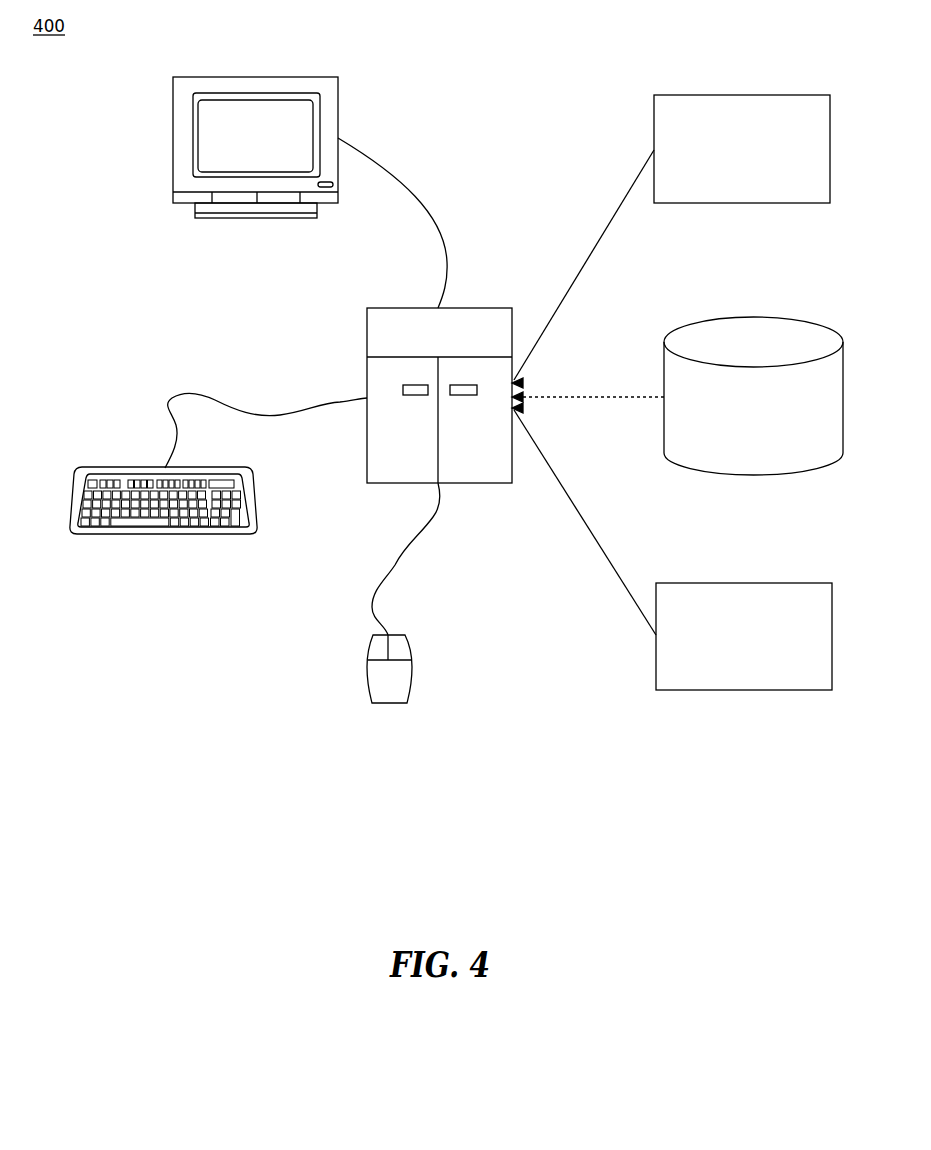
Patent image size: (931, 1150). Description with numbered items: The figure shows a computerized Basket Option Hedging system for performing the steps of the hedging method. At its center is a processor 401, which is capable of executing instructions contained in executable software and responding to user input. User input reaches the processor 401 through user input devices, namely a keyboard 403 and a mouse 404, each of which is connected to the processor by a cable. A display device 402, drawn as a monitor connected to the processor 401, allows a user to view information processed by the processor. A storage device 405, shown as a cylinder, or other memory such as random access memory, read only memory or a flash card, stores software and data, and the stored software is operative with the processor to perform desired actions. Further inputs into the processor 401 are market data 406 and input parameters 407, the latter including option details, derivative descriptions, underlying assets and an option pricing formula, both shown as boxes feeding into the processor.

The processor 401 is at (448, 317).
The display device 402 is at (185, 157).
The keyboard 403 is at (197, 480).
The mouse 404 is at (375, 617).
The storage device 405 is at (782, 327).
The market data 406 is at (757, 105).
The input parameters 407 is at (767, 588).